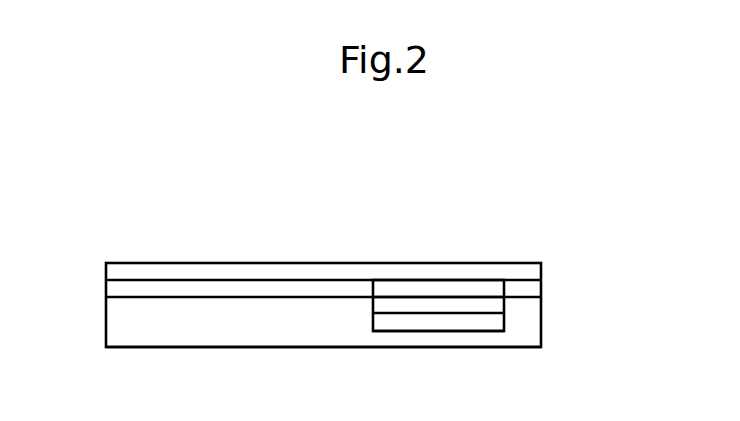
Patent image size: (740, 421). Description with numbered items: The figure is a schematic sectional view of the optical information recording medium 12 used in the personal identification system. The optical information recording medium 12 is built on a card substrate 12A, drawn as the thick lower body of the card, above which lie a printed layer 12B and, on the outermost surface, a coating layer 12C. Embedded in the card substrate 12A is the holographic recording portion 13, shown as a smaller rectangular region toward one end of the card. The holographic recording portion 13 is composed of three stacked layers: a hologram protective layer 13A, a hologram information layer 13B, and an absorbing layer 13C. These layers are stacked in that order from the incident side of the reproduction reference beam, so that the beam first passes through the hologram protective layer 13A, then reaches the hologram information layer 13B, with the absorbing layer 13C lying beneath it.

The optical information recording medium 12 is at (353, 277).
The card substrate 12A is at (222, 333).
The printed layer 12B is at (117, 287).
The coating layer 12C is at (342, 268).
The holographic recording portion 13 is at (520, 320).
The hologram protective layer 13A is at (497, 288).
The hologram information layer 13B is at (498, 308).
The absorbing layer 13C is at (498, 323).